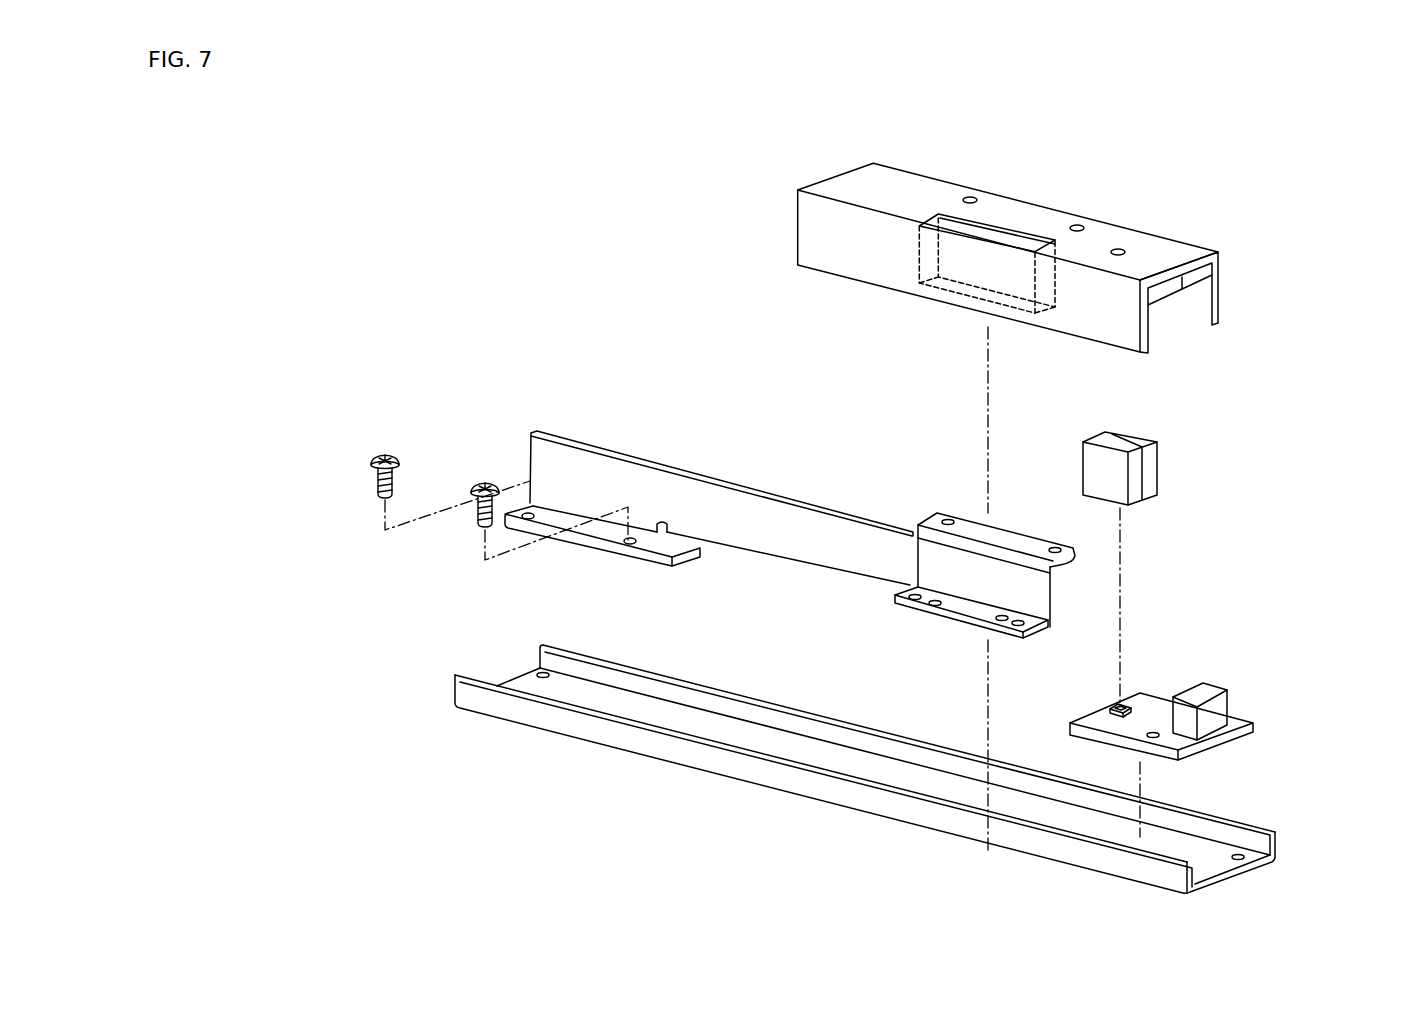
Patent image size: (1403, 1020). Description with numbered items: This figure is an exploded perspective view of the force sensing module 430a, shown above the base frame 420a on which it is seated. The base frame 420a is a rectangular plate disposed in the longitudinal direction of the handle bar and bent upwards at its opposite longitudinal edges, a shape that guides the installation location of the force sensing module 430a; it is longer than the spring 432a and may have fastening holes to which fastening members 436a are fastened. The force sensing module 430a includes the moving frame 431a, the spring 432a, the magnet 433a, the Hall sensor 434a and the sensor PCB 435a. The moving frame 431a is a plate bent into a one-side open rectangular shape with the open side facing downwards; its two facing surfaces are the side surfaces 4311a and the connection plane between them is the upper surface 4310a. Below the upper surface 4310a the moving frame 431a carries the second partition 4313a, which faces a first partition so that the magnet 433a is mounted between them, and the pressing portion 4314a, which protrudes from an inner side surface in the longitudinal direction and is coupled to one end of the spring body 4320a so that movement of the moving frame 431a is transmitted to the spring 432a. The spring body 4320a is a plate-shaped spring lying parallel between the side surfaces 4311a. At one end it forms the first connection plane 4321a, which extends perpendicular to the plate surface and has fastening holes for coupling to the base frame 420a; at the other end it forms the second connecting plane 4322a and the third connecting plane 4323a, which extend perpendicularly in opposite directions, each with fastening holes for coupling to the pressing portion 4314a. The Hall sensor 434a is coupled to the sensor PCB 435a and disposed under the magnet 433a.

The force sensing module 430a is at (590, 160).
The moving frame 431a is at (1093, 207).
The upper surface 4310a is at (905, 183).
The side surfaces 4311a is at (1198, 298).
The second partition 4313a is at (1172, 288).
The pressing portion 4314a is at (917, 263).
The spring 432a is at (528, 422).
The spring body 4320a is at (606, 470).
The first connection plane 4321a is at (597, 535).
The second connecting plane 4322a is at (965, 525).
The third connecting plane 4323a is at (960, 607).
The magnet 433a is at (1150, 467).
The Hall sensor 434a is at (1138, 703).
The sensor PCB 435a is at (1243, 732).
The fastening member 436a is at (370, 471).
The base frame 420a is at (795, 773).